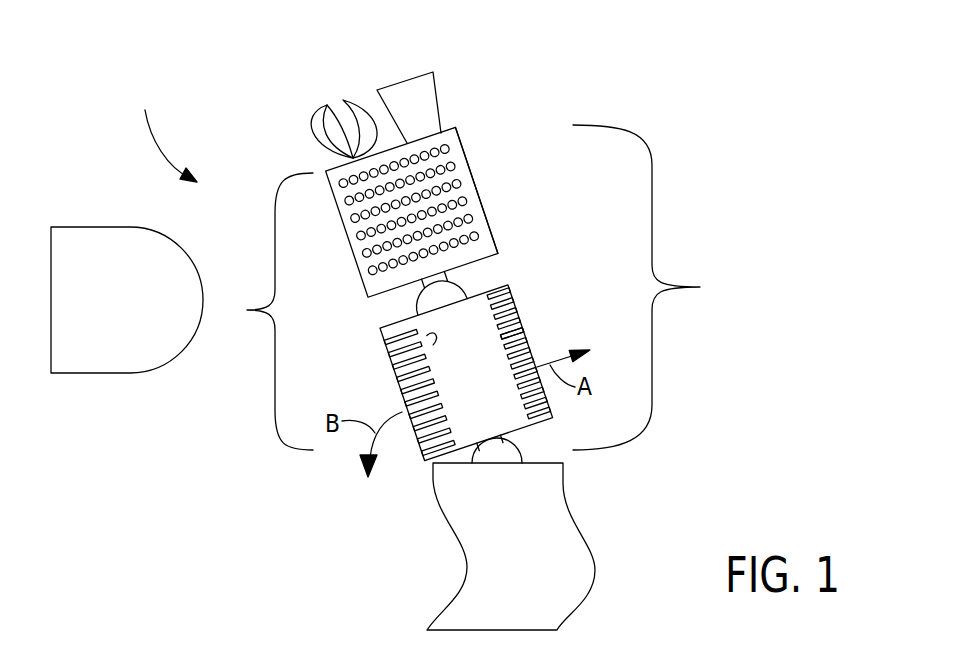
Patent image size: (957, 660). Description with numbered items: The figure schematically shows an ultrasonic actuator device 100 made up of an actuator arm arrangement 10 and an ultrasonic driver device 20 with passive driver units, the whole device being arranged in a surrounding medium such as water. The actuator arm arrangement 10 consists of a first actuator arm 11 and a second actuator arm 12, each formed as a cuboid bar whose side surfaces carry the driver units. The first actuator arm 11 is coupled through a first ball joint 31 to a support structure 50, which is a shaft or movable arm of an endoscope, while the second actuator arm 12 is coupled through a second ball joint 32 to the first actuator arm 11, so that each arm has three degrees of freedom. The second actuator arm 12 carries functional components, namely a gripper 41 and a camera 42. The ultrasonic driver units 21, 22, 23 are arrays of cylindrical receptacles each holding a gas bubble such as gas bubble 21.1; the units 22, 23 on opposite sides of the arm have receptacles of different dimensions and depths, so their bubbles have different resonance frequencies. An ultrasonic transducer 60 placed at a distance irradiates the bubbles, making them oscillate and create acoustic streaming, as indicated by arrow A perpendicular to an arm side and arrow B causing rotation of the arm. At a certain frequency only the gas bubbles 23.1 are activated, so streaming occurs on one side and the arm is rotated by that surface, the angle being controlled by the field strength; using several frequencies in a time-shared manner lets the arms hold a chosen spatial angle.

The ultrasonic actuator device 100 is at (165, 107).
The actuator arm arrangement 10 is at (713, 287).
The ultrasonic driver device 20 is at (247, 310).
The ultrasonic transducer 60 is at (128, 311).
The support structure 50 is at (552, 538).
The first ball joint 31 is at (508, 453).
The second ball joint 32 is at (452, 292).
The first actuator arm 11 is at (443, 335).
The second actuator arm 12 is at (482, 252).
The passive ultrasonic driver unit 21 is at (441, 194).
The gas bubble 21.1 is at (448, 150).
The passive ultrasonic driver unit 22 is at (410, 343).
The passive ultrasonic driver unit 23 is at (507, 298).
The gas bubbles 23.1 is at (527, 337).
The gripper 41 is at (362, 110).
The camera 42 is at (420, 128).